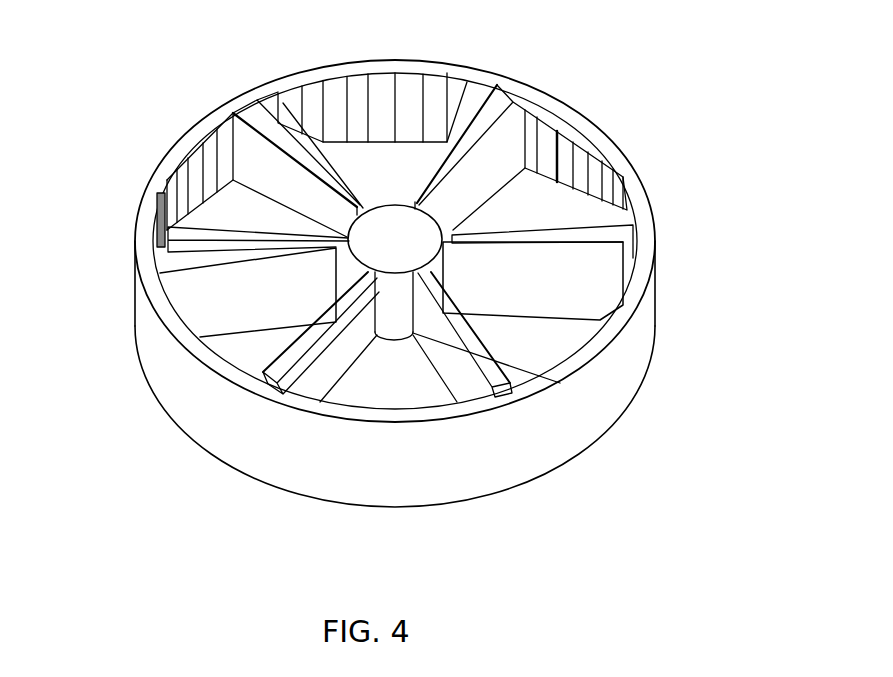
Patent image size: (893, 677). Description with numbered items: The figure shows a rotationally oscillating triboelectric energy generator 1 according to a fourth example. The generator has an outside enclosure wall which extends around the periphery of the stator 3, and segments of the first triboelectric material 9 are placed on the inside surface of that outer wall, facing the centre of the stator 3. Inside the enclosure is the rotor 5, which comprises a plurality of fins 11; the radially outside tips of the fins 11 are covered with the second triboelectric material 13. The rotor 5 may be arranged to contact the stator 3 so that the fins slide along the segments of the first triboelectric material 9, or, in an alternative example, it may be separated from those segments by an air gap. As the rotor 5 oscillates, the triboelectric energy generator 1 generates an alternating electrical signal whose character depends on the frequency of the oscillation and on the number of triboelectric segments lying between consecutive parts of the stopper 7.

The triboelectric energy generator 1 is at (178, 107).
The stator 3 is at (633, 367).
The rotor 5 is at (395, 220).
The stopper 7 is at (207, 316).
The first triboelectric material 9 is at (563, 137).
The fins 11 is at (590, 285).
The second triboelectric material 13 is at (503, 390).